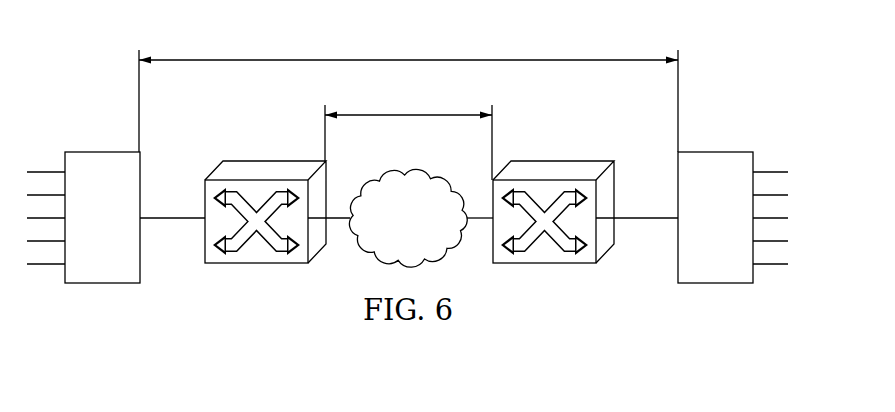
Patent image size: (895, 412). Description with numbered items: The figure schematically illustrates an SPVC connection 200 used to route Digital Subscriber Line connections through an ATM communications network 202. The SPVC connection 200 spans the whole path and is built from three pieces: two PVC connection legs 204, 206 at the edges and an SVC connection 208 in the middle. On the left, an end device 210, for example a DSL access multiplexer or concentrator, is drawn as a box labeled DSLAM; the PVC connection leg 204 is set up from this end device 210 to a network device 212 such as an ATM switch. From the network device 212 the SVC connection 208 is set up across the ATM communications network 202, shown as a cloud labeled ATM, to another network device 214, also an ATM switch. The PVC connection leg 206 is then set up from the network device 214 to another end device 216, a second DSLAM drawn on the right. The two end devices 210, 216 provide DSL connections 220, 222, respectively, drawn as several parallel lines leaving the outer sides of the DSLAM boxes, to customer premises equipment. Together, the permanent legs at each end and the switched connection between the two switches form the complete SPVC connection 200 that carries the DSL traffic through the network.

The SPVC connection 200 is at (259, 59).
The ATM communications network 202 is at (388, 171).
The PVC connection leg 204 is at (181, 210).
The PVC connection leg 206 is at (637, 210).
The SVC connection 208 is at (408, 113).
The end device 210 is at (103, 284).
The network device 212 is at (257, 264).
The network device 214 is at (543, 265).
The end device 216 is at (715, 285).
The DSL connections 220 is at (51, 268).
The DSL connections 222 is at (766, 268).